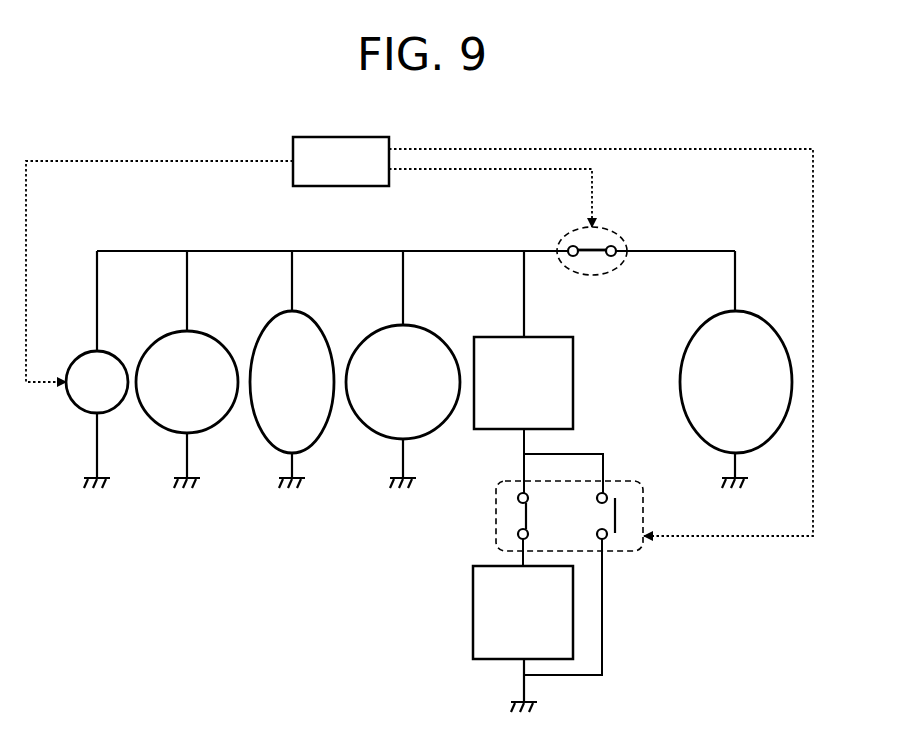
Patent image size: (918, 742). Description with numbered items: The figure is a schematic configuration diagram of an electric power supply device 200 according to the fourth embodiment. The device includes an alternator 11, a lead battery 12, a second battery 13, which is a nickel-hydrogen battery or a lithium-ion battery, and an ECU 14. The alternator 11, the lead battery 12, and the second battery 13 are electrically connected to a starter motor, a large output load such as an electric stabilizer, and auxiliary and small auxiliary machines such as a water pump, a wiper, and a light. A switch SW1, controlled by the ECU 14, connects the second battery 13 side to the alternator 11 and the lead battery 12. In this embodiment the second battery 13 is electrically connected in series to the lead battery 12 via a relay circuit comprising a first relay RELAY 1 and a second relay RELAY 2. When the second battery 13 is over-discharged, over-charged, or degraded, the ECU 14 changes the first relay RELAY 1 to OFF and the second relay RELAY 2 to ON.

The electric power supply device 200 is at (100, 124).
The ECU 14 is at (372, 137).
The alternator 11 is at (82, 358).
The lead battery 12 is at (545, 337).
The second battery 13 is at (490, 566).
The switch SW1 is at (566, 234).
The relay 1 RELAY 1 is at (518, 495).
The relay 2 RELAY 2 is at (607, 494).